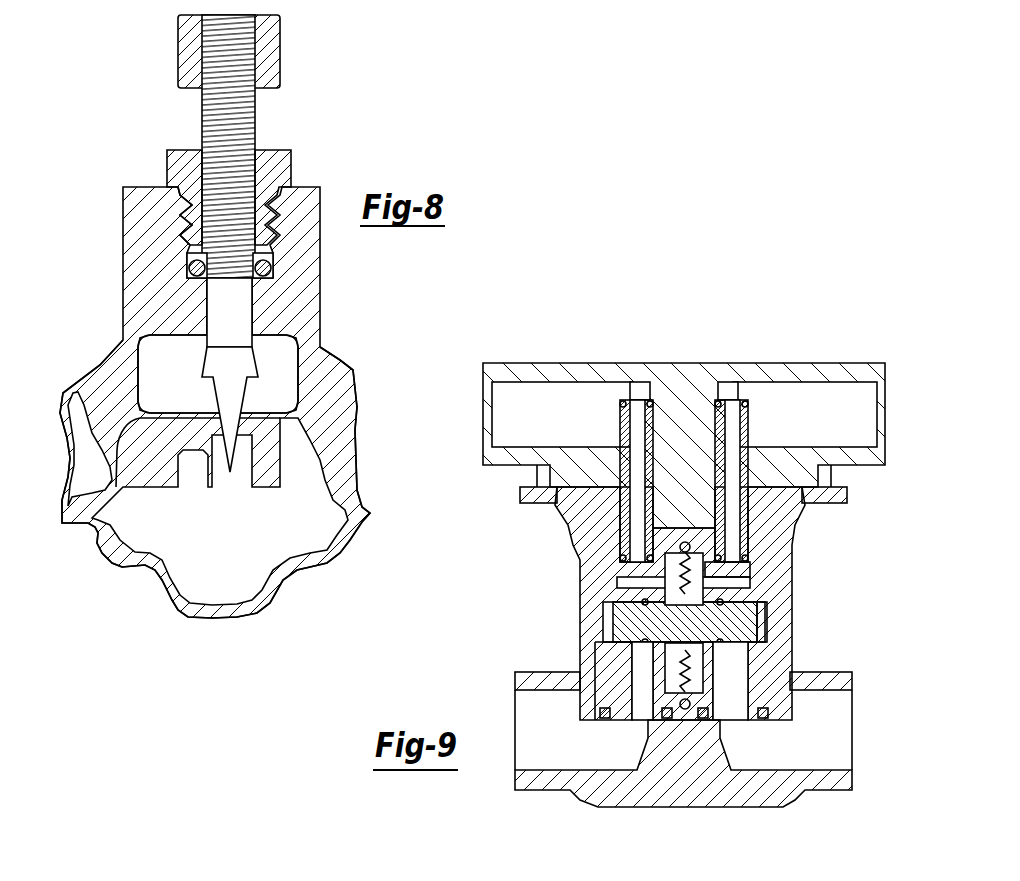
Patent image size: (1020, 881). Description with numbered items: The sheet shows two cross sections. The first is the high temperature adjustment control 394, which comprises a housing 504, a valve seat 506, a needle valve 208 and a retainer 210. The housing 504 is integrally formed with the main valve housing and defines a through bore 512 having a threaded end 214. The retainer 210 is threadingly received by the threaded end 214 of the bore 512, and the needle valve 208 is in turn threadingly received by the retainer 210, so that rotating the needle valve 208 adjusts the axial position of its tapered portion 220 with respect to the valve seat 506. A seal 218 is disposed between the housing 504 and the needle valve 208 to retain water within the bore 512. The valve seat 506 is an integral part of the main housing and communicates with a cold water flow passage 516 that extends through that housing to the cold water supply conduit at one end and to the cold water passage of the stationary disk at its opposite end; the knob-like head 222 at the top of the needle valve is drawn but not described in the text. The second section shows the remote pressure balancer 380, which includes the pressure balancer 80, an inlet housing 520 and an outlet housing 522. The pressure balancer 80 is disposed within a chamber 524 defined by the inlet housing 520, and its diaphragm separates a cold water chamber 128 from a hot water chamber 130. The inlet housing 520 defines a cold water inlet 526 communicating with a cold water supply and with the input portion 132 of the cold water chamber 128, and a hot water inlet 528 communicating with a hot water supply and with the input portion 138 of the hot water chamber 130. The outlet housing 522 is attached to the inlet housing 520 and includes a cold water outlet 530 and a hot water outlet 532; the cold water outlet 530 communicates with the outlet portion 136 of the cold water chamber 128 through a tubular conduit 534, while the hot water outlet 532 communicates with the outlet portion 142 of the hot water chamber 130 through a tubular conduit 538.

In FIG. 8, the high temperature adjustment control 394 is at (500, 80).
In FIG. 8, the adjusting knob 222 is at (268, 50).
In FIG. 8, the retainer 210 is at (283, 170).
In FIG. 8, the threaded end 214 is at (185, 205).
In FIG. 8, the seal 218 is at (266, 276).
In FIG. 8, the needle valve 208 is at (233, 301).
In FIG. 8, the tapered portion 220 is at (233, 399).
In FIG. 8, the housing 504 is at (112, 392).
In FIG. 8, the through bore 512 is at (212, 308).
In FIG. 8, the valve seat 506 is at (290, 462).
In FIG. 8, the cold water flow passage 516 is at (203, 467).
In FIG. 9, the pressure balancer 380 is at (757, 345).
In FIG. 9, the outlet housing 522 is at (662, 366).
In FIG. 9, the cold water outlet 530 is at (547, 433).
In FIG. 9, the hot water outlet 532 is at (822, 431).
In FIG. 9, the tubular conduit 534 is at (623, 507).
In FIG. 9, the tubular conduit 538 is at (747, 492).
In FIG. 9, the outlet portion 136 is at (637, 567).
In FIG. 9, the outlet portion 142 is at (735, 570).
In FIG. 9, the pressure balancer 80 is at (630, 622).
In FIG. 9, the input portion 138 is at (770, 625).
In FIG. 9, the chamber 524 is at (733, 657).
In FIG. 9, the hot water chamber 130 is at (737, 697).
In FIG. 9, the input portion 132 is at (643, 657).
In FIG. 9, the cold water chamber 128 is at (637, 695).
In FIG. 9, the cold water inlet 526 is at (535, 743).
In FIG. 9, the hot water inlet 528 is at (833, 748).
In FIG. 9, the inlet housing 520 is at (687, 787).